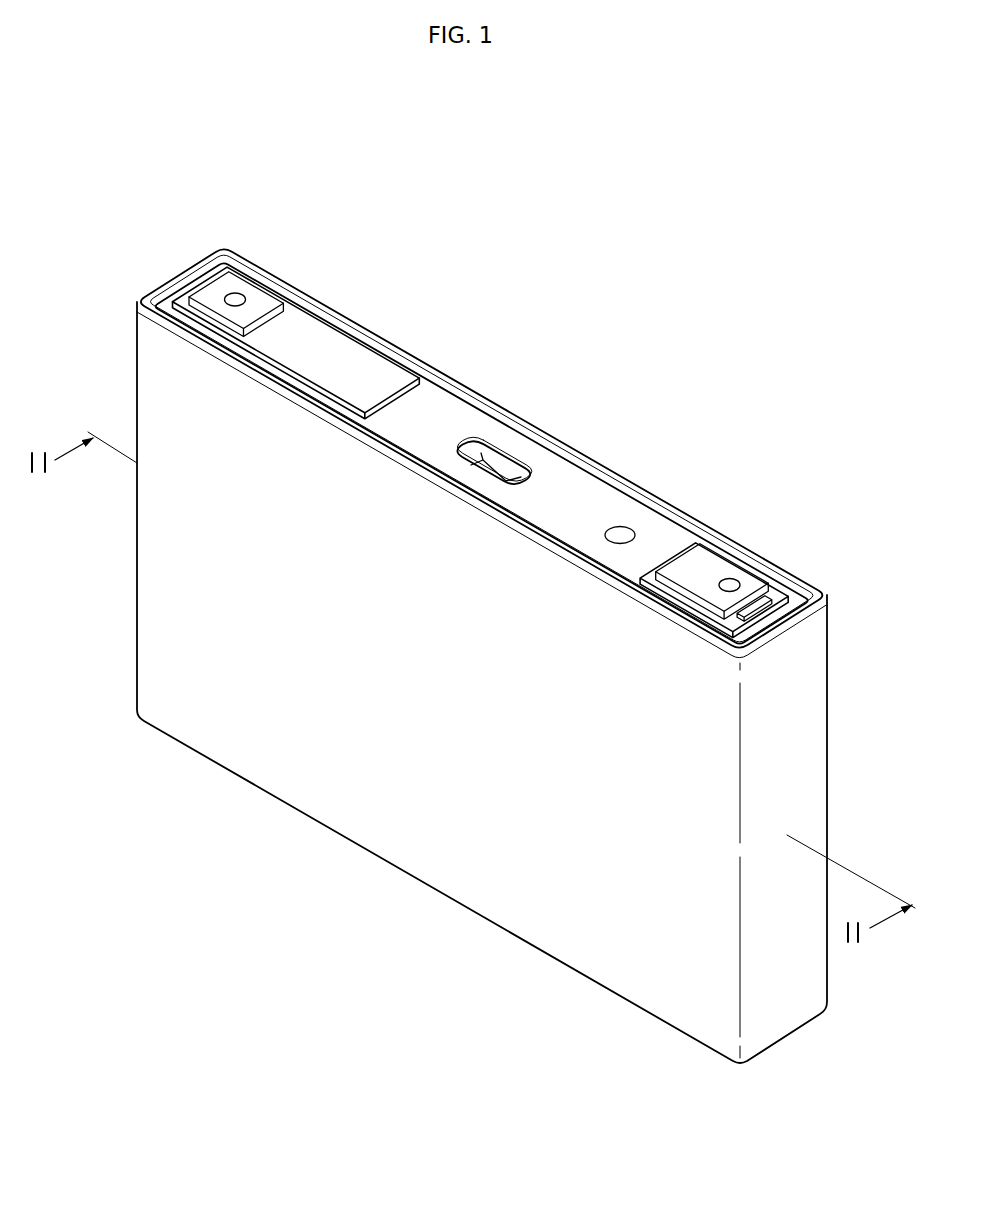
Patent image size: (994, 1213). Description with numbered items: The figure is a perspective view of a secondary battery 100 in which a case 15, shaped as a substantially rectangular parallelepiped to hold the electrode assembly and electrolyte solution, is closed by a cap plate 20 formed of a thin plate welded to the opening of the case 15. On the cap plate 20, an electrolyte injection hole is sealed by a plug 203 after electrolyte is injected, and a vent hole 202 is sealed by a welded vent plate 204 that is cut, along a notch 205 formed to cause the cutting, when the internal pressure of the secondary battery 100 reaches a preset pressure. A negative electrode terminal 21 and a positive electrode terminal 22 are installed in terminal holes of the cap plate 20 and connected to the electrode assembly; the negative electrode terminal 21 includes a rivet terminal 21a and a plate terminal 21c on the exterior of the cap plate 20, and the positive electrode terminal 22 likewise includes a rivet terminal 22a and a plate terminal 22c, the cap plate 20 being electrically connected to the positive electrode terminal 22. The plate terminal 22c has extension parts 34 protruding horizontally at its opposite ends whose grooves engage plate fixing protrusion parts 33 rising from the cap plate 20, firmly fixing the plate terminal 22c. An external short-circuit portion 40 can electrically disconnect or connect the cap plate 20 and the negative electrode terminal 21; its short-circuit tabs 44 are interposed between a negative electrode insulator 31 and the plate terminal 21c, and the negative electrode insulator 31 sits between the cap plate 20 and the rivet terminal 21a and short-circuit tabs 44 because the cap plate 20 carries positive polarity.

The secondary battery 100 is at (673, 384).
The case 15 is at (410, 843).
The cap plate 20 is at (445, 410).
The vent hole 202 is at (479, 439).
The vent plate 204 is at (502, 460).
The notch 205 is at (513, 477).
The plug 203 is at (622, 528).
The external short-circuit portion 40 is at (375, 338).
The negative electrode terminal 21 is at (240, 279).
The rivet terminal 21a is at (226, 294).
The plate terminal 21c is at (263, 300).
The positive electrode terminal 22 is at (716, 548).
The rivet terminal 22a is at (741, 582).
The plate terminal 22c is at (734, 570).
The negative electrode insulator 31 is at (328, 327).
The plate fixing protrusion parts 33 is at (774, 613).
The extension parts 34 is at (741, 628).
The short-circuit tabs 44 is at (381, 377).